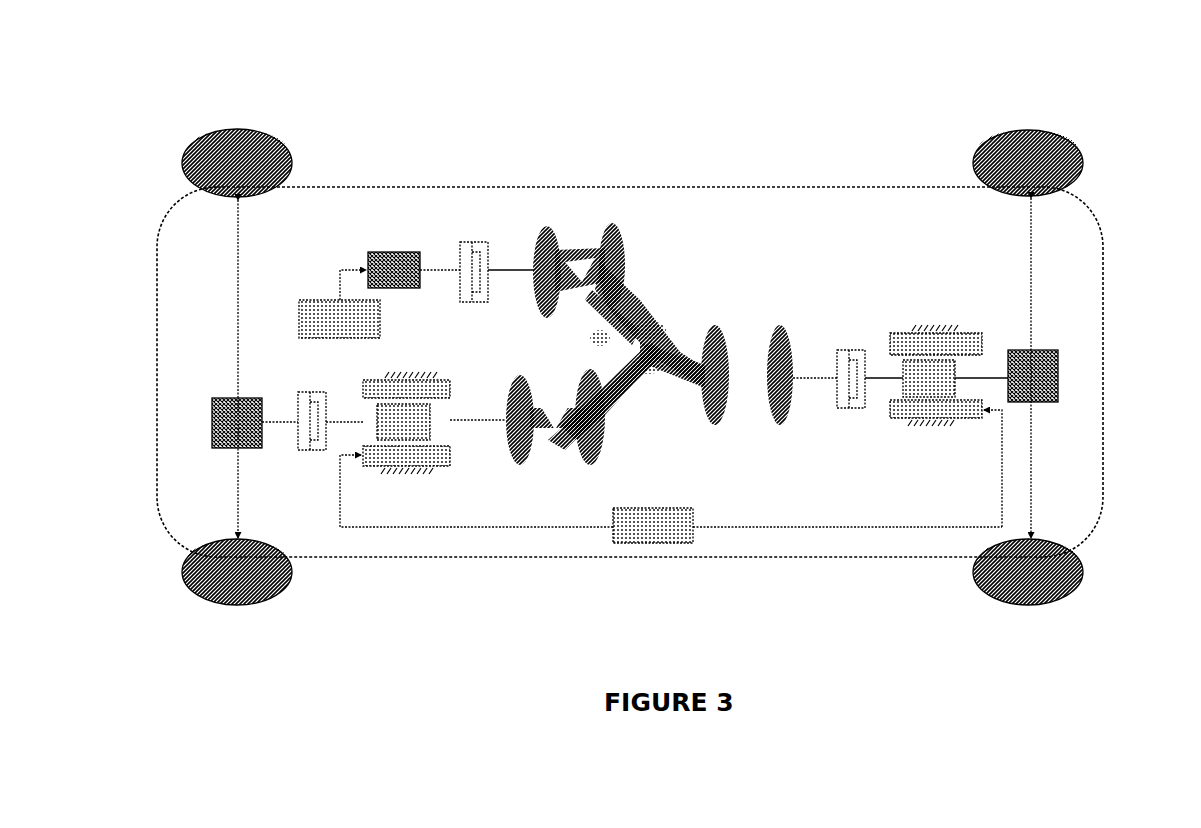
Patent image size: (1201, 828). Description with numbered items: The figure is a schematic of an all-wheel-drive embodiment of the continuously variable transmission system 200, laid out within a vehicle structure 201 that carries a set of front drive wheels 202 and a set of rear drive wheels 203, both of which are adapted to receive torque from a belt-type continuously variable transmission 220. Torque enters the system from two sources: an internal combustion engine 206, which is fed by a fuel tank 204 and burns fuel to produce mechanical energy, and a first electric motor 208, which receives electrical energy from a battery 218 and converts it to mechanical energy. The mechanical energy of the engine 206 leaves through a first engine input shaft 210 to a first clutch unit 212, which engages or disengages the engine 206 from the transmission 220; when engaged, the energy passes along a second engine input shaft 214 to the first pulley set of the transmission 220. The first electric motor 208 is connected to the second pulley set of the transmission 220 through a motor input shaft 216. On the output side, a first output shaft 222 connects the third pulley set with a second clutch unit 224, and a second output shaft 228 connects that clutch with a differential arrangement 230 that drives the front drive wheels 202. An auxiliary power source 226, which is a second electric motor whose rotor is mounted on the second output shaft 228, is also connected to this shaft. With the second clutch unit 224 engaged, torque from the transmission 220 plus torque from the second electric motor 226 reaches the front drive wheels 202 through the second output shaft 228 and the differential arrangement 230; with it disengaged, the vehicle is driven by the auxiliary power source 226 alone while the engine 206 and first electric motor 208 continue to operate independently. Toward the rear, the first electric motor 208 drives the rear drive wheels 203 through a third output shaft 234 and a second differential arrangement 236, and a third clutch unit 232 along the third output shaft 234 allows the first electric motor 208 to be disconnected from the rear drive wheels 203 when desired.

The continuously variable transmission system 200 is at (788, 116).
The vehicle structure 201 is at (1108, 331).
The front drive wheels 202 is at (1062, 126).
The rear drive wheels 203 is at (238, 126).
The fuel tank 204 is at (296, 314).
The internal combustion engine 206 is at (379, 249).
The first electric motor 208 is at (417, 474).
The first engine input shaft 210 is at (432, 263).
The first clutch unit 212 is at (477, 240).
The second engine input shaft 214 is at (509, 264).
The motor input shaft 216 is at (471, 432).
The battery 218 is at (665, 505).
The belt-type continuously variable transmission 220 is at (672, 266).
The first output shaft 222 is at (804, 390).
The second clutch unit 224 is at (852, 344).
The auxiliary power source 226 is at (956, 428).
The second output shaft 228 is at (990, 364).
The differential arrangement 230 is at (1050, 396).
The third clutch unit 232 is at (306, 386).
The third output shaft 234 is at (276, 436).
The second differential arrangement 236 is at (210, 428).